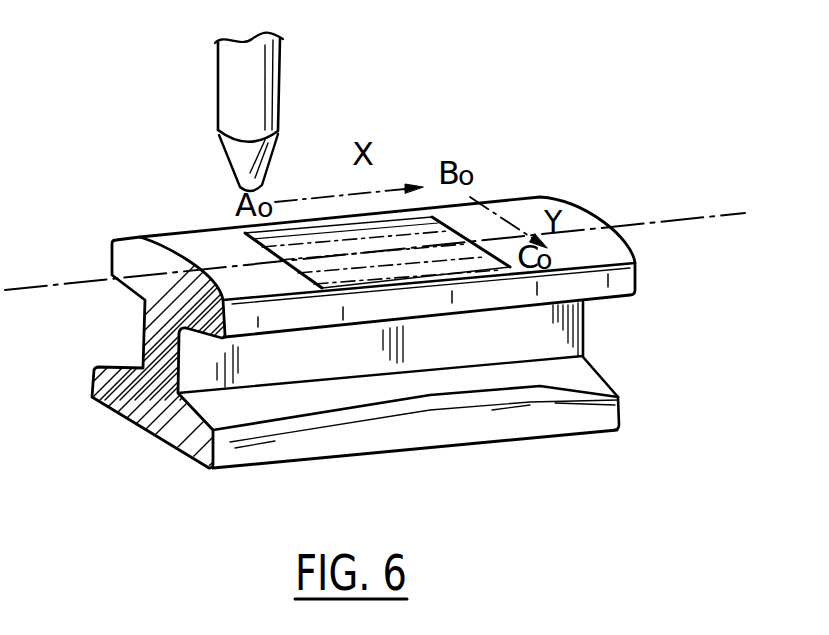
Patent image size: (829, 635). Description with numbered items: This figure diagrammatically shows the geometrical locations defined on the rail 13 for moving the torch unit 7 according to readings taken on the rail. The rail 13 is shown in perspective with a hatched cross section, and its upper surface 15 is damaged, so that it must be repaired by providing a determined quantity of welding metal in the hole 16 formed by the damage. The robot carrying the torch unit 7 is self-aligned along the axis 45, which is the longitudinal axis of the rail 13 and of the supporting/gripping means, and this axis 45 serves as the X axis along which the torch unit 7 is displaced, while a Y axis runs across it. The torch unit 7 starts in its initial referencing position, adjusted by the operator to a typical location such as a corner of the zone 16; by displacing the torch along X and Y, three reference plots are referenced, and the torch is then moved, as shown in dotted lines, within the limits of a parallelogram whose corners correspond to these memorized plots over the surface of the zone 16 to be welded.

The torch unit 7 is at (233, 90).
The rail 13 is at (147, 400).
The upper surface of the rail 15 is at (193, 245).
The hole 16 is at (490, 262).
The axis 45 is at (712, 214).